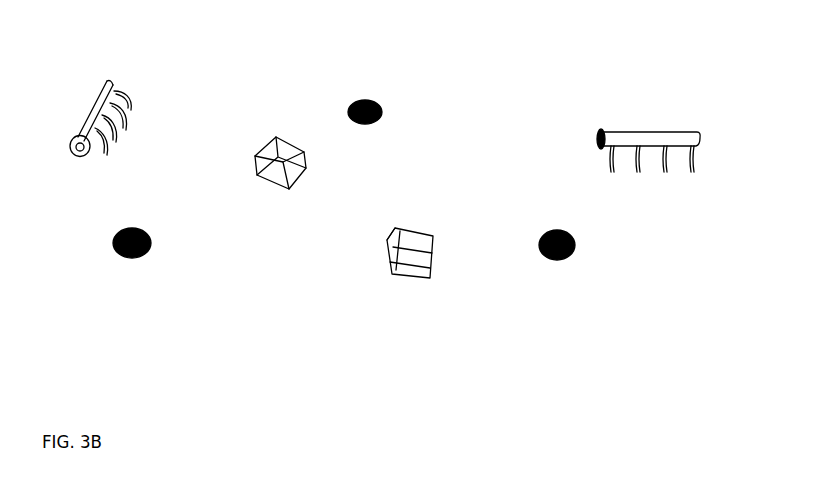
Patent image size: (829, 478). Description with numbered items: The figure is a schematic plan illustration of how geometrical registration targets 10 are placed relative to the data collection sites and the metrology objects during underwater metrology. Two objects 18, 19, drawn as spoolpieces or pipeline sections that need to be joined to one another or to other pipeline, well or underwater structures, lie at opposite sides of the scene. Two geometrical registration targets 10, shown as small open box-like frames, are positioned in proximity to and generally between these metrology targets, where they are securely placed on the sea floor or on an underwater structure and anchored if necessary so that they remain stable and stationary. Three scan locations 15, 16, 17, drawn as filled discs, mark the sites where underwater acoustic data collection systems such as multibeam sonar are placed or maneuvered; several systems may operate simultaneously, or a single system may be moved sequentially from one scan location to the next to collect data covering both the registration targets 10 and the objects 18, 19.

The geometrical registration target 10 is at (284, 127).
The scan location 15 is at (141, 253).
The scan location 16 is at (377, 103).
The scan location 17 is at (570, 257).
The object 18 is at (93, 118).
The object 19 is at (680, 133).